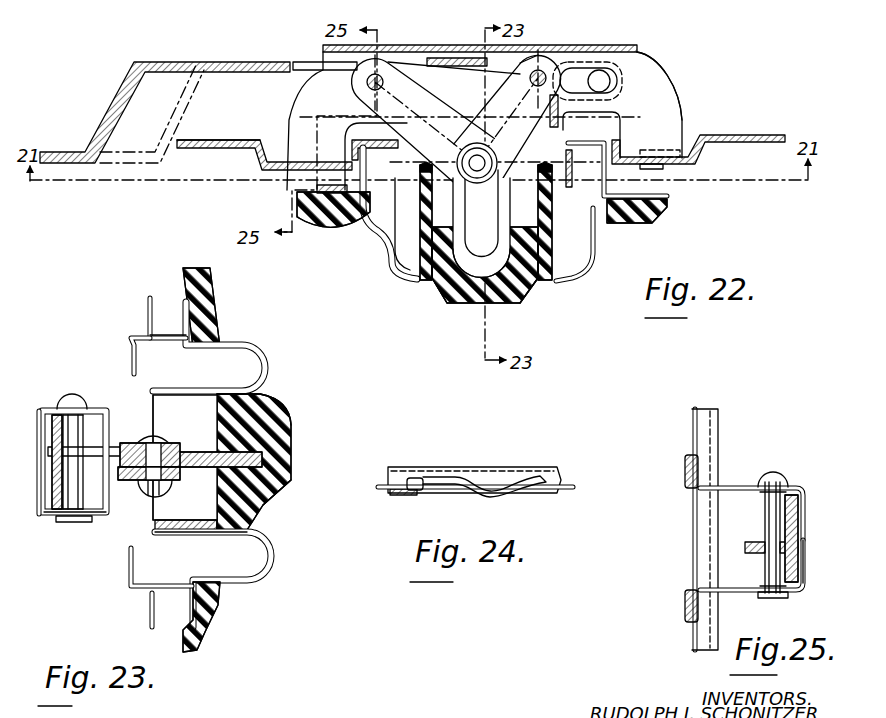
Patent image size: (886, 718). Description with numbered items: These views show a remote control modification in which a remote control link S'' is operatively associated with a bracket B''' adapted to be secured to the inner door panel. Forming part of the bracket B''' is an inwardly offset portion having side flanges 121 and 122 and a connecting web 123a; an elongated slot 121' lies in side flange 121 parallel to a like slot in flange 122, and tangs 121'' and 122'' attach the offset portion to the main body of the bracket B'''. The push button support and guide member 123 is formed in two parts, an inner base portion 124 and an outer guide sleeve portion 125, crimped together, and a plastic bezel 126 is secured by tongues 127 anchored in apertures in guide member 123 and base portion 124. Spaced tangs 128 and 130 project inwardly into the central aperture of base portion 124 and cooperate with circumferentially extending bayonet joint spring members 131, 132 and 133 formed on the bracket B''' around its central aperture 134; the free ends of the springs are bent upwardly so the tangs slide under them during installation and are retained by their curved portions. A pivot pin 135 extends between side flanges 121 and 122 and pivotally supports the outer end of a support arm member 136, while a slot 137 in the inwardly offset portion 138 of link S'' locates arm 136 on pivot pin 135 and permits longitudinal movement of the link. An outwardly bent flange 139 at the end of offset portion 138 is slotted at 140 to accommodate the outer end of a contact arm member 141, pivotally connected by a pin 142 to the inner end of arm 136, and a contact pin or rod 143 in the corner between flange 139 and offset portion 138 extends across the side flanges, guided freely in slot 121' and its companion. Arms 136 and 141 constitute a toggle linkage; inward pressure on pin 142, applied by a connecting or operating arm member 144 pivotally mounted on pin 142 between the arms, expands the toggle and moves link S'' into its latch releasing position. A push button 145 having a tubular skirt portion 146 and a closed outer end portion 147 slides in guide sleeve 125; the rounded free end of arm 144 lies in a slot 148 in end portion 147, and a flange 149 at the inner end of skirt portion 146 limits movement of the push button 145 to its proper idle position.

In FIG. 22, the side flange 121 is at (512, 121).
In FIG. 23, the side flange 121 is at (84, 540).
In FIG. 25, the side flange 121 is at (751, 583).
In FIG. 22, the elongated slot 121' is at (485, 35).
In FIG. 25, the elongated slot 121' is at (755, 539).
In FIG. 22, the tang 121'' is at (481, 154).
In FIG. 25, the tang 121'' is at (665, 606).
In FIG. 23, the side flange 122 is at (80, 444).
In FIG. 25, the side flange 122 is at (751, 490).
In FIG. 25, the tang 122'' is at (665, 473).
In FIG. 22, the push button support and guide member 123 is at (395, 275).
In FIG. 23, the push button support and guide member 123 is at (40, 428).
In FIG. 25, the push button support and guide member 123 is at (807, 578).
In FIG. 22, the connecting web 123a is at (640, 50).
In FIG. 22, the inner base portion 124 is at (648, 195).
In FIG. 23, the inner base portion 124 is at (163, 341).
In FIG. 24, the inner base portion 124 is at (567, 490).
In FIG. 22, the outer guide sleeve portion 125 is at (576, 258).
In FIG. 23, the outer guide sleeve portion 125 is at (234, 390).
In FIG. 22, the plastic bezel 126 is at (612, 222).
In FIG. 23, the plastic bezel 126 is at (208, 322).
In FIG. 22, the tongues 127 is at (310, 218).
In FIG. 22, the tang 128 is at (560, 128).
In FIG. 24, the tang 130 is at (433, 490).
In FIG. 22, the bayonet joint spring member 131 is at (575, 166).
In FIG. 22, the bayonet joint spring member 132 is at (370, 225).
In FIG. 23, the bayonet joint spring member 133 is at (133, 360).
In FIG. 24, the bayonet joint spring member 133 is at (497, 486).
In FIG. 22, the central aperture 134 is at (410, 140).
In FIG. 23, the central aperture 134 is at (142, 382).
In FIG. 22, the pivot pin 135 is at (394, 87).
In FIG. 25, the pivot pin 135 is at (770, 522).
In FIG. 22, the support arm member 136 is at (434, 102).
In FIG. 23, the support arm member 136 is at (168, 481).
In FIG. 25, the support arm member 136 is at (745, 547).
In FIG. 22, the slot 137 is at (310, 62).
In FIG. 25, the slot 137 is at (788, 543).
In FIG. 22, the inwardly offset portion 138 is at (232, 62).
In FIG. 23, the inwardly offset portion 138 is at (56, 521).
In FIG. 25, the inwardly offset portion 138 is at (792, 500).
In FIG. 22, the outwardly bent flange 139 is at (612, 112).
In FIG. 23, the outwardly bent flange 139 is at (98, 426).
In FIG. 22, the slot 140 is at (537, 58).
In FIG. 23, the slot 140 is at (98, 428).
In FIG. 22, the contact arm member 141 is at (503, 176).
In FIG. 23, the contact arm member 141 is at (150, 437).
In FIG. 22, the pin 142 is at (421, 206).
In FIG. 23, the pin 142 is at (156, 487).
In FIG. 22, the contact pin or rod 143 is at (540, 92).
In FIG. 23, the contact pin or rod 143 is at (76, 493).
In FIG. 22, the connecting or operating arm member 144 is at (534, 286).
In FIG. 23, the connecting or operating arm member 144 is at (205, 461).
In FIG. 22, the push button 145 is at (432, 299).
In FIG. 23, the push button 145 is at (272, 396).
In FIG. 22, the tubular skirt portion 146 is at (546, 206).
In FIG. 23, the tubular skirt portion 146 is at (196, 533).
In FIG. 22, the closed outer end portion 147 is at (520, 292).
In FIG. 23, the closed outer end portion 147 is at (276, 428).
In FIG. 22, the slot 148 is at (486, 250).
In FIG. 23, the slot 148 is at (266, 508).
In FIG. 22, the flange 149 is at (418, 172).
In FIG. 23, the flange 149 is at (160, 533).
In FIG. 22, the remote control link S'' is at (131, 113).
In FIG. 22, the bracket B''' is at (209, 179).
In FIG. 23, the bracket B''' is at (147, 587).
In FIG. 24, the bracket B''' is at (473, 464).
In FIG. 25, the bracket B''' is at (727, 524).